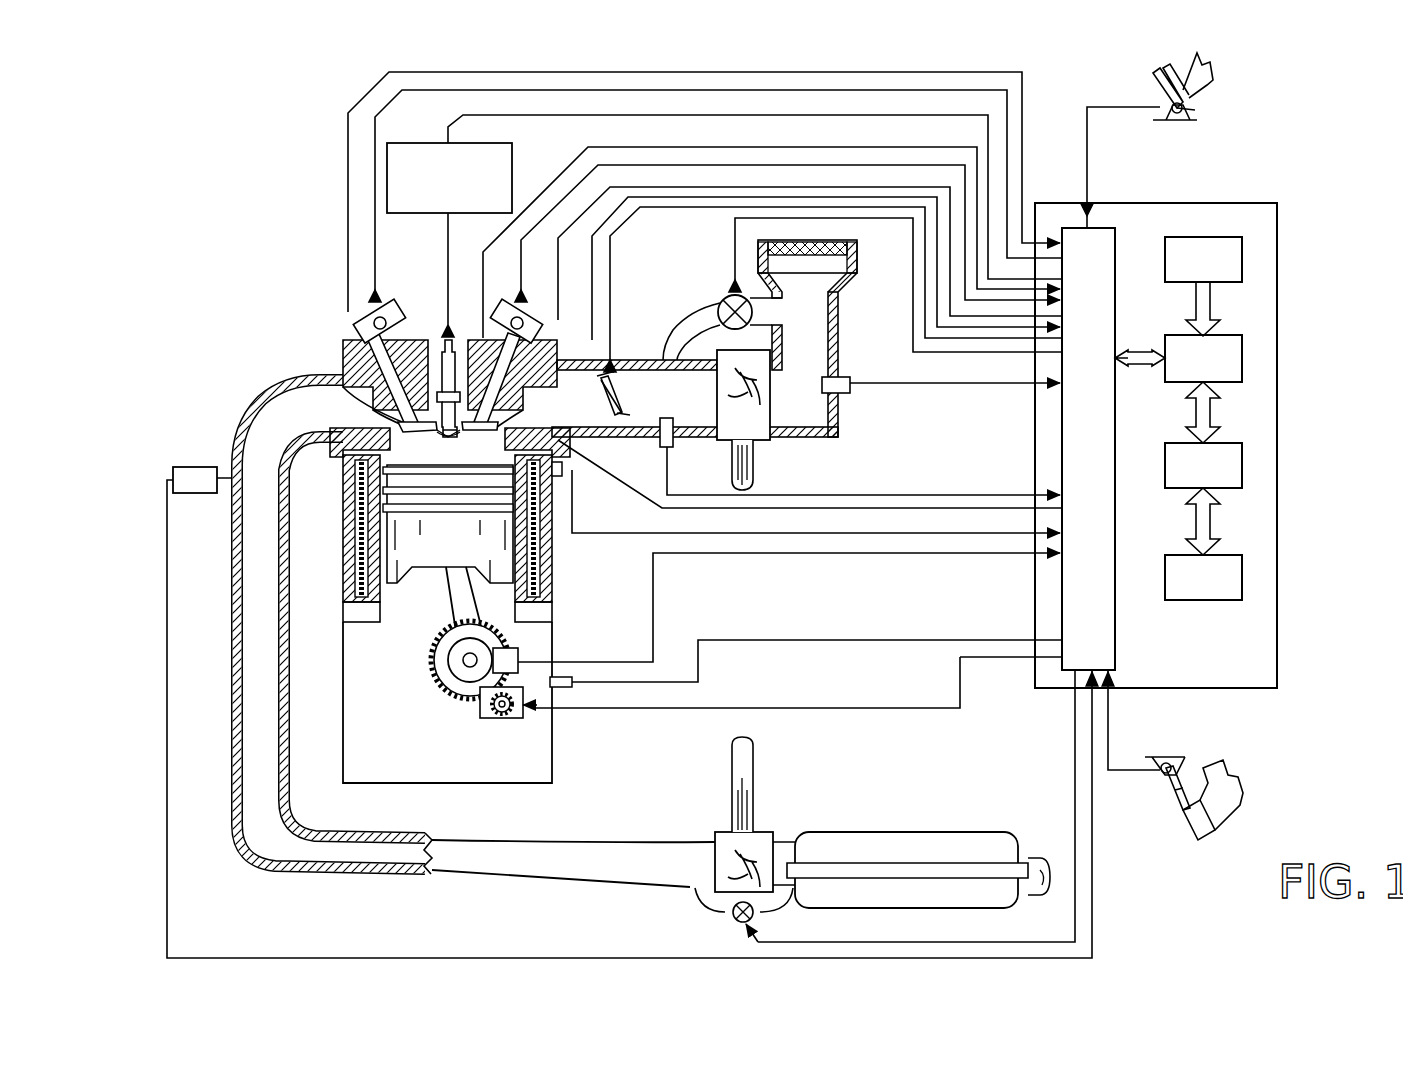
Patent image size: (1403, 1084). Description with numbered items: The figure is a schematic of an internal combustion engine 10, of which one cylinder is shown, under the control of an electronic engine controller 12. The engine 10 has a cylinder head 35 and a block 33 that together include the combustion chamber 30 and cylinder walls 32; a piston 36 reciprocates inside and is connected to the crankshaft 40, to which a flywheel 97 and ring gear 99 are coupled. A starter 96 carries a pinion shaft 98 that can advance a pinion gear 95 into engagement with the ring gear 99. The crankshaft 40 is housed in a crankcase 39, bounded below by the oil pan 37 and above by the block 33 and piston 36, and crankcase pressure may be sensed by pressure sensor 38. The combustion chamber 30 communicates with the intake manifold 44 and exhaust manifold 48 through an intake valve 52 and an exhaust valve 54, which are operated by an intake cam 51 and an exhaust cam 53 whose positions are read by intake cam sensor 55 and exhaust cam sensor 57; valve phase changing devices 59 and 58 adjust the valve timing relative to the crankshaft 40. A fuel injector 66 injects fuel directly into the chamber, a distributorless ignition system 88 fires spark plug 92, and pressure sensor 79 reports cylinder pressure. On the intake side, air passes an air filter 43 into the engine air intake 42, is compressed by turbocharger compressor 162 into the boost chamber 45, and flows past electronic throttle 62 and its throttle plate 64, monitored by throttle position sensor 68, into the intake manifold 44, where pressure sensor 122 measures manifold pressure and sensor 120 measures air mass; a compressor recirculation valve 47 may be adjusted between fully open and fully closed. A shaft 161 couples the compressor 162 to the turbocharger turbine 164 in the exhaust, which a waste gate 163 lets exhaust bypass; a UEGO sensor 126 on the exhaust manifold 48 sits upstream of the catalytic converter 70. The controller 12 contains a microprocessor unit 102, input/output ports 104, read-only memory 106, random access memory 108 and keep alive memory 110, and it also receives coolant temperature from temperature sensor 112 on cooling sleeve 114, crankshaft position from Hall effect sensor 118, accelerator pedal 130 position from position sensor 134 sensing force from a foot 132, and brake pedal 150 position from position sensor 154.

The internal combustion engine 10 is at (268, 283).
The electronic engine controller 12 is at (1277, 203).
The combustion chamber 30 is at (420, 495).
The cylinder walls 32 is at (390, 595).
The engine block 33 is at (345, 488).
The cylinder head 35 is at (340, 338).
The piston 36 is at (430, 555).
The oil pan 37 is at (552, 768).
The pressure sensor 38 is at (565, 682).
The crankcase 39 is at (362, 703).
The crankshaft 40 is at (460, 684).
The engine air intake 42 is at (680, 262).
The air filter 43 is at (818, 257).
The intake manifold 44 is at (695, 398).
The boost chamber 45 is at (761, 355).
The compressor recirculation valve 47 is at (725, 296).
The exhaust manifold 48 is at (476, 633).
The intake cam 51 is at (518, 300).
The intake valve 52 is at (495, 400).
The exhaust cam 53 is at (390, 305).
The exhaust valve 54 is at (360, 395).
The intake cam sensor 55 is at (523, 325).
The exhaust cam sensor 57 is at (362, 322).
The valve phase changing device 58 is at (386, 320).
The valve phase changing device 59 is at (522, 318).
The electronic throttle 62 is at (612, 380).
The throttle plate 64 is at (605, 410).
The fuel injector 66 is at (562, 470).
The throttle position sensor 68 is at (598, 375).
The catalytic converter 70 is at (838, 832).
The cylinder pressure sensor 79 is at (470, 380).
The distributorless ignition system 88 is at (402, 143).
The spark plug 92 is at (452, 345).
The pinion gear 95 is at (504, 718).
The starter 96 is at (522, 718).
The flywheel 97 is at (447, 660).
The pinion shaft 98 is at (497, 710).
The ring gear 99 is at (463, 698).
The microprocessor unit 102 is at (1242, 370).
The input/output ports 104 is at (1115, 235).
The read-only memory 106 is at (1242, 267).
The random access memory 108 is at (1242, 473).
The keep alive memory 110 is at (1242, 585).
The temperature sensor 112 is at (558, 478).
The cooling sleeve 114 is at (552, 565).
The Hall effect sensor 118 is at (518, 648).
The air mass sensor 120 is at (845, 377).
The pressure sensor 122 is at (660, 442).
The Universal Exhaust Gas Oxygen sensor 126 is at (175, 467).
The accelerator pedal 130 is at (1160, 83).
The foot 132 is at (1205, 72).
The position sensor 134 is at (1195, 110).
The brake pedal 150 is at (1185, 815).
The position sensor 154 is at (1152, 768).
The shaft 161 is at (732, 458).
The turbocharger compressor 162 is at (757, 420).
The waste gate 163 is at (732, 925).
The turbocharger turbine 164 is at (715, 838).